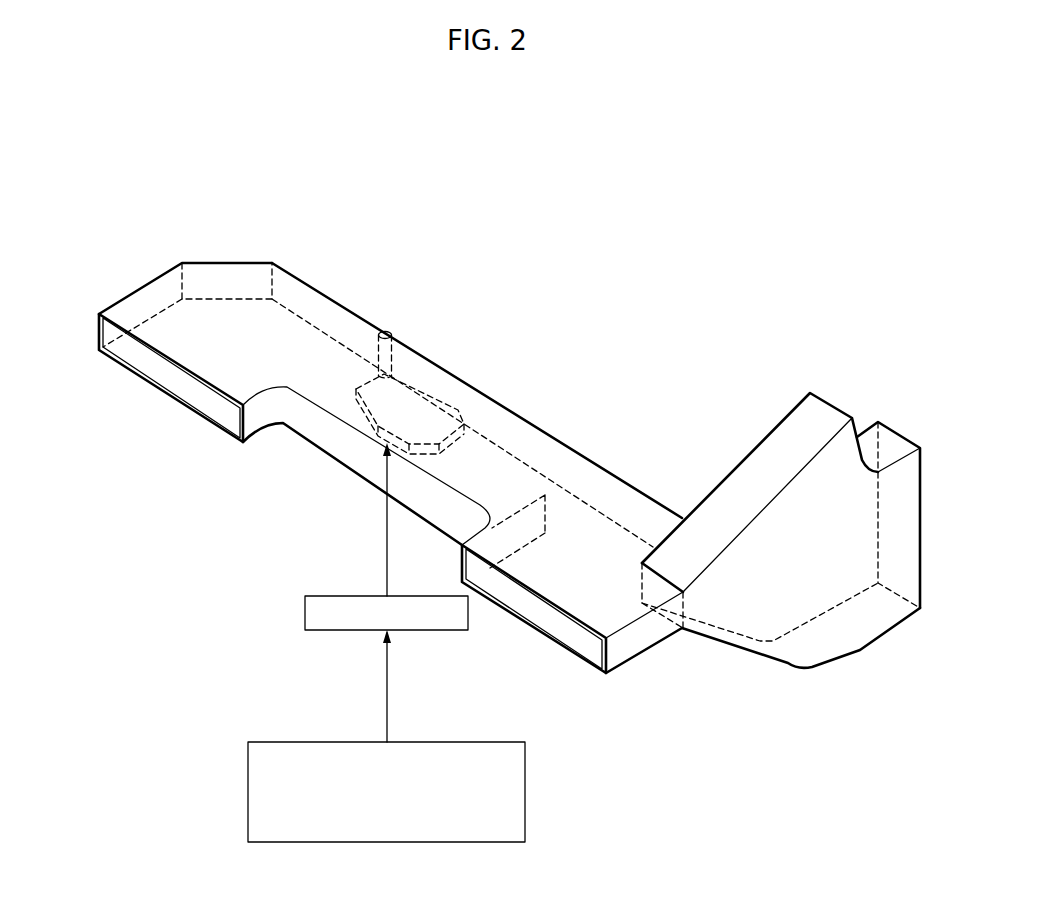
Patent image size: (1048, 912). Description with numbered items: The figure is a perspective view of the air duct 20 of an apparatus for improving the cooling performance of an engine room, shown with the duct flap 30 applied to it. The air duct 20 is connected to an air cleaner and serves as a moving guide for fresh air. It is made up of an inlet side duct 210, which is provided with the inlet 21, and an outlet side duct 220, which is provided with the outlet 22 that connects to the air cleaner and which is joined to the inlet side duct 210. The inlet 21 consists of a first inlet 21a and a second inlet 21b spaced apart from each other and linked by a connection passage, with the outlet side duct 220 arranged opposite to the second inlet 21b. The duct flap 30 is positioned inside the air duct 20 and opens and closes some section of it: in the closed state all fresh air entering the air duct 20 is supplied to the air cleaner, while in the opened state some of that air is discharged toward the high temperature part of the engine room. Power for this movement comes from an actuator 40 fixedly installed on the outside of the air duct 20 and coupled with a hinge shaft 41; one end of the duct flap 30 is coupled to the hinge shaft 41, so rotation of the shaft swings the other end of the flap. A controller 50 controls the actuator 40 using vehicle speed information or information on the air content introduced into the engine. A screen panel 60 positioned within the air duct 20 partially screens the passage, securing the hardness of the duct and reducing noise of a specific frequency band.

The air duct 20 is at (189, 252).
The inlet 21 is at (156, 402).
The first inlet 21a is at (217, 423).
The second inlet 21b is at (547, 622).
The outlet 22 is at (903, 525).
The duct flap 30 is at (315, 307).
The actuator 40 is at (427, 410).
The hinge shaft 41 is at (393, 343).
The controller 50 is at (305, 612).
The screen panel 60 is at (527, 500).
The inlet side duct 210 is at (520, 420).
The outlet side duct 220 is at (828, 623).